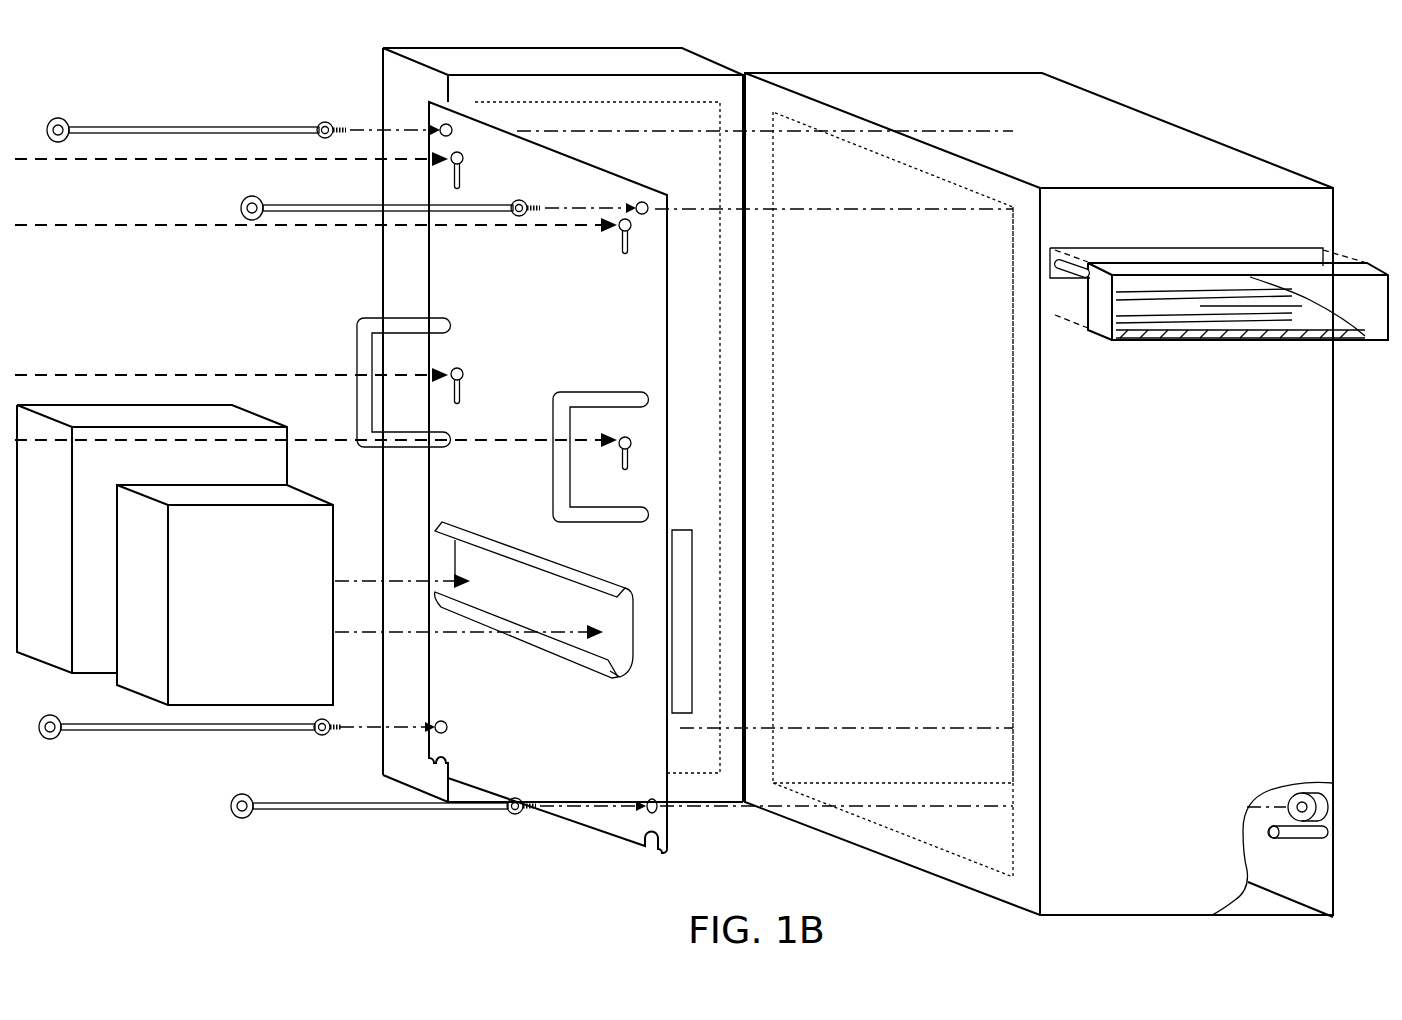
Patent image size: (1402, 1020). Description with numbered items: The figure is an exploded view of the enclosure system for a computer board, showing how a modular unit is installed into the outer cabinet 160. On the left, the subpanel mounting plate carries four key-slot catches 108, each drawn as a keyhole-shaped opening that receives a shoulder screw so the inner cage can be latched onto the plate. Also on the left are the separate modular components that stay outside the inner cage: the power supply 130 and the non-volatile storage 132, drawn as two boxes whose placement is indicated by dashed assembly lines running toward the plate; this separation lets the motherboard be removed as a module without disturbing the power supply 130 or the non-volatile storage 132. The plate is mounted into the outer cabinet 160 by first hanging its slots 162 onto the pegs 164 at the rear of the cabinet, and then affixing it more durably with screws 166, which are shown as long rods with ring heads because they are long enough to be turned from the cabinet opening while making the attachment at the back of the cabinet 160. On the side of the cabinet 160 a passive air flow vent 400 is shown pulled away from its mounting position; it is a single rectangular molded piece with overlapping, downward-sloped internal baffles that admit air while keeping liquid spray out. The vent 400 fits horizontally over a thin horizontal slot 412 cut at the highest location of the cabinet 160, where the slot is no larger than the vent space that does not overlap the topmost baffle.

The key-slot catches 108 is at (462, 175).
The power supply 130 is at (200, 473).
The non-volatile storage 132 is at (268, 564).
The outer cabinet 160 is at (1179, 846).
The slots 162 is at (658, 866).
The pegs 164 is at (1296, 845).
The screws 166 is at (198, 124).
The passive air flow vent 400 is at (1366, 270).
The horizontal slot 412 is at (1063, 268).